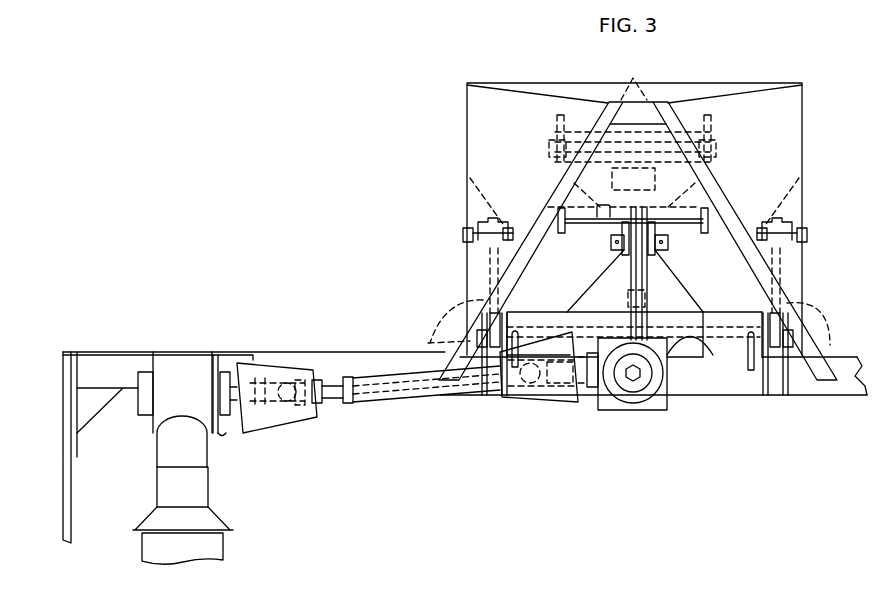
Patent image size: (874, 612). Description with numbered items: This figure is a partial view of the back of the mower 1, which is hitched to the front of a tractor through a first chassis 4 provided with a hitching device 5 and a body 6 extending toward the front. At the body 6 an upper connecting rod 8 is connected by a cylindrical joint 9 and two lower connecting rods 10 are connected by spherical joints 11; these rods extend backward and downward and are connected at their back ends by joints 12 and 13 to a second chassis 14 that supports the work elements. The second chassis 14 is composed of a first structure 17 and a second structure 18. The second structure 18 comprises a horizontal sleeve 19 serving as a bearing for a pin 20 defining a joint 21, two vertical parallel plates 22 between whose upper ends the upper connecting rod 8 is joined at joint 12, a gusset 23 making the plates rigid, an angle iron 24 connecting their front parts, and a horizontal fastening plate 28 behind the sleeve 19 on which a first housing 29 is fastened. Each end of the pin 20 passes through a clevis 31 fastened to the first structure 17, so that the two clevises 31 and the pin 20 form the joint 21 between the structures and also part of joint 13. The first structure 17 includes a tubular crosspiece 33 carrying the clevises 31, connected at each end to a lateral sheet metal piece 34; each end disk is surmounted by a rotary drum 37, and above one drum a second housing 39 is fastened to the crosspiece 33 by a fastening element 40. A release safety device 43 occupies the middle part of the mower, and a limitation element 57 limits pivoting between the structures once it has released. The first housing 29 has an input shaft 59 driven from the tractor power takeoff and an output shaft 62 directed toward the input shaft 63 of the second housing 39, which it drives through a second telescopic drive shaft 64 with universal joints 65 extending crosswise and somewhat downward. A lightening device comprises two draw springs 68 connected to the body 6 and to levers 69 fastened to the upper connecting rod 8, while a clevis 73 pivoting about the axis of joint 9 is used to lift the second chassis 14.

The mower 1 is at (312, 233).
The first chassis 4 is at (467, 160).
The hitching device 5 is at (522, 258).
The body 6 is at (803, 143).
The upper connecting rod 8 is at (700, 181).
The joint 9 is at (716, 148).
The lower connecting rods 10 is at (490, 268).
The joint 11 is at (468, 233).
The joint 12 is at (668, 242).
The joint 13 is at (632, 322).
The second chassis 14 is at (217, 352).
The first structure 17 is at (718, 396).
The second structure 18 is at (717, 310).
The sleeve 19 is at (683, 350).
The pin 20 is at (541, 327).
The joint 21 is at (266, 338).
The parallel plates 22 is at (611, 241).
The gusset 23 is at (630, 256).
The angle iron 24 is at (650, 306).
The fastening plate 28 is at (706, 350).
The first housing 29 is at (610, 411).
The clevis 31 is at (492, 398).
The tubular crosspiece 33 is at (847, 396).
The lateral sheet metal piece 34 is at (63, 478).
The rotary drum 37 is at (222, 548).
The second housing 39 is at (162, 428).
The fastening element 40 is at (223, 433).
The release safety device 43 is at (628, 298).
The limitation element 57 is at (517, 345).
The input shaft 59 is at (640, 378).
The output shaft 62 is at (580, 386).
The input shaft 63 is at (262, 380).
The second telescopic drive shaft 64 is at (405, 388).
The universal joints 65 is at (290, 404).
The draw springs 68 is at (562, 236).
The lever 69 is at (560, 200).
The clevis 73 is at (634, 79).